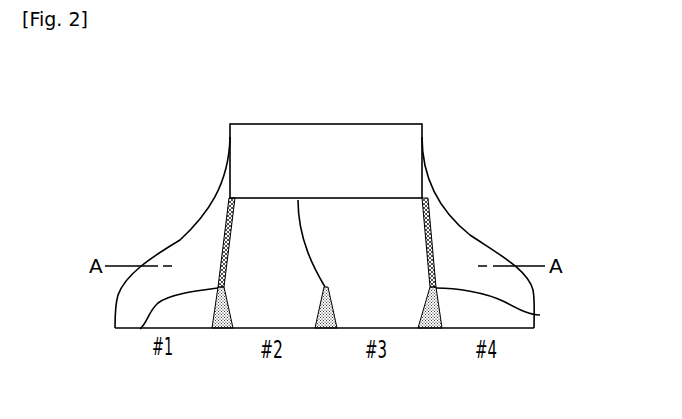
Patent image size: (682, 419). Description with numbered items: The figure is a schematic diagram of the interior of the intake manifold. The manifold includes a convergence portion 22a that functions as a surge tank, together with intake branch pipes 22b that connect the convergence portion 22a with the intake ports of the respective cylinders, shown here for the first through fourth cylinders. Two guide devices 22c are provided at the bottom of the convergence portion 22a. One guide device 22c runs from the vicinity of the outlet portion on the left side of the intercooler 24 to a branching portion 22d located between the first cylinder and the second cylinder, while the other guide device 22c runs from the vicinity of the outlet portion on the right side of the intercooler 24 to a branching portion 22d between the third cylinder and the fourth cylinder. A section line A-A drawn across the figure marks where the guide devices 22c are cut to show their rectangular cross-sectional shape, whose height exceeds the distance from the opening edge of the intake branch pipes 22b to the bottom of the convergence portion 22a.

The intercooler 24 is at (364, 124).
The convergence portion 22a is at (499, 252).
The intake branch pipes 22b is at (180, 315).
The guide devices 22c is at (226, 238).
The branching portion 22d is at (298, 200).